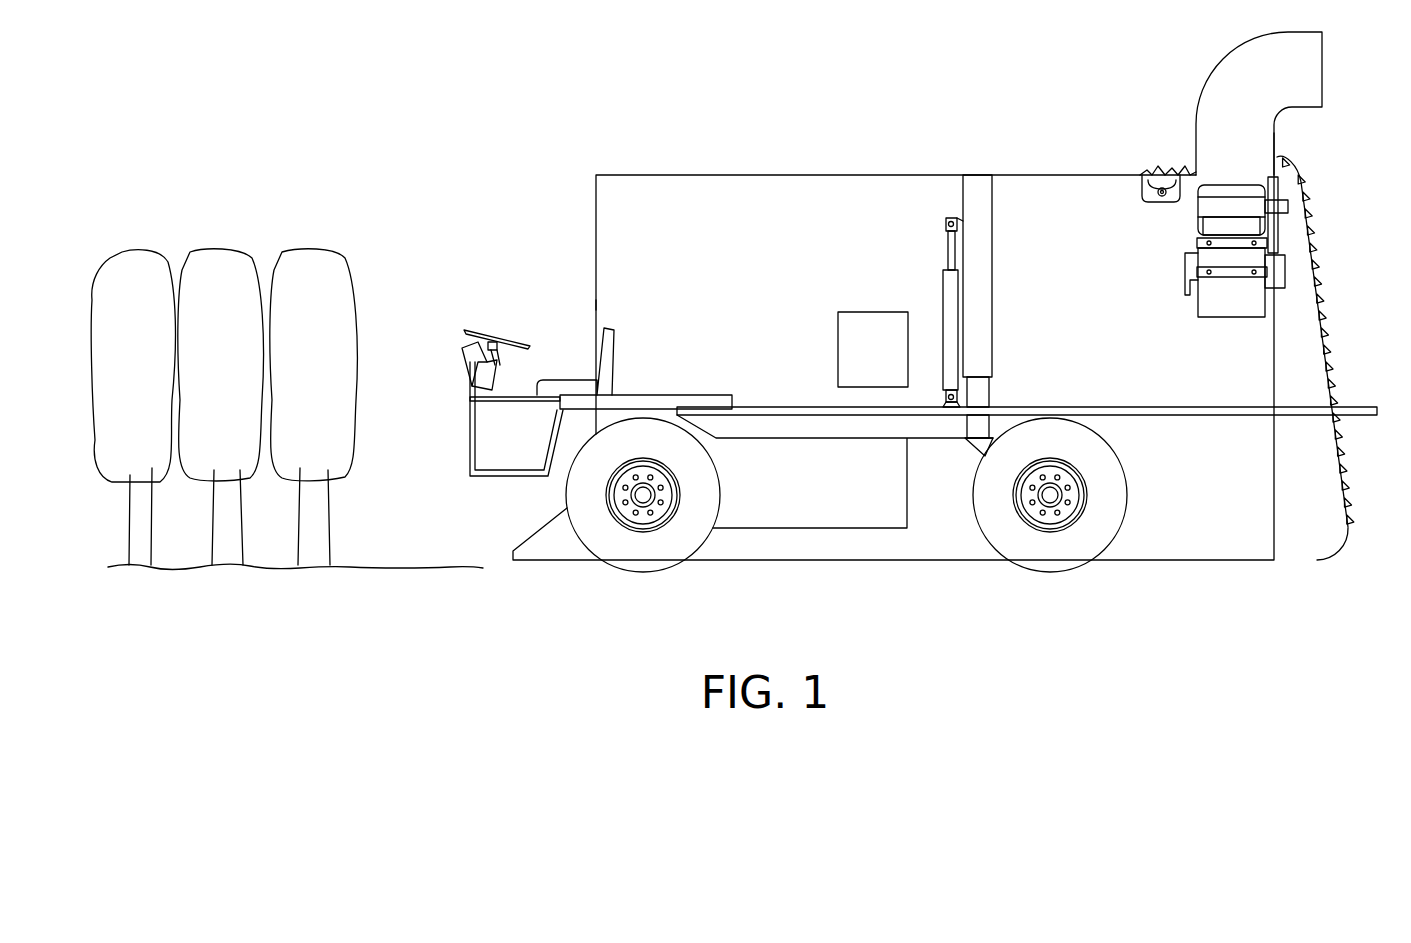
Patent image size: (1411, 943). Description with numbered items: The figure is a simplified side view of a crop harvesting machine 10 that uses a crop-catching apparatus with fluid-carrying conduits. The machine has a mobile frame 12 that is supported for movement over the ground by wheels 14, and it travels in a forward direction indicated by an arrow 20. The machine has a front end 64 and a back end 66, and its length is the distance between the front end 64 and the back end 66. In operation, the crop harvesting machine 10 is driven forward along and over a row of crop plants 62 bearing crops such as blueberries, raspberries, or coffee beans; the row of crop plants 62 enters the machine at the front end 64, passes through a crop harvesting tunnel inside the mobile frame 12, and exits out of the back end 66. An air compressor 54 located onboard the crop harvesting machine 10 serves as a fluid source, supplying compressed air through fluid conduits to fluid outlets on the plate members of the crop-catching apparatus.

The crop harvesting machine 10 is at (551, 133).
The mobile frame 12 is at (596, 228).
The wheels 14 is at (633, 550).
The arrow 20 is at (438, 487).
The air compressor 54 is at (873, 312).
The row of crop plants 62 is at (293, 250).
The front end 64 is at (596, 300).
The back end 66 is at (1328, 358).